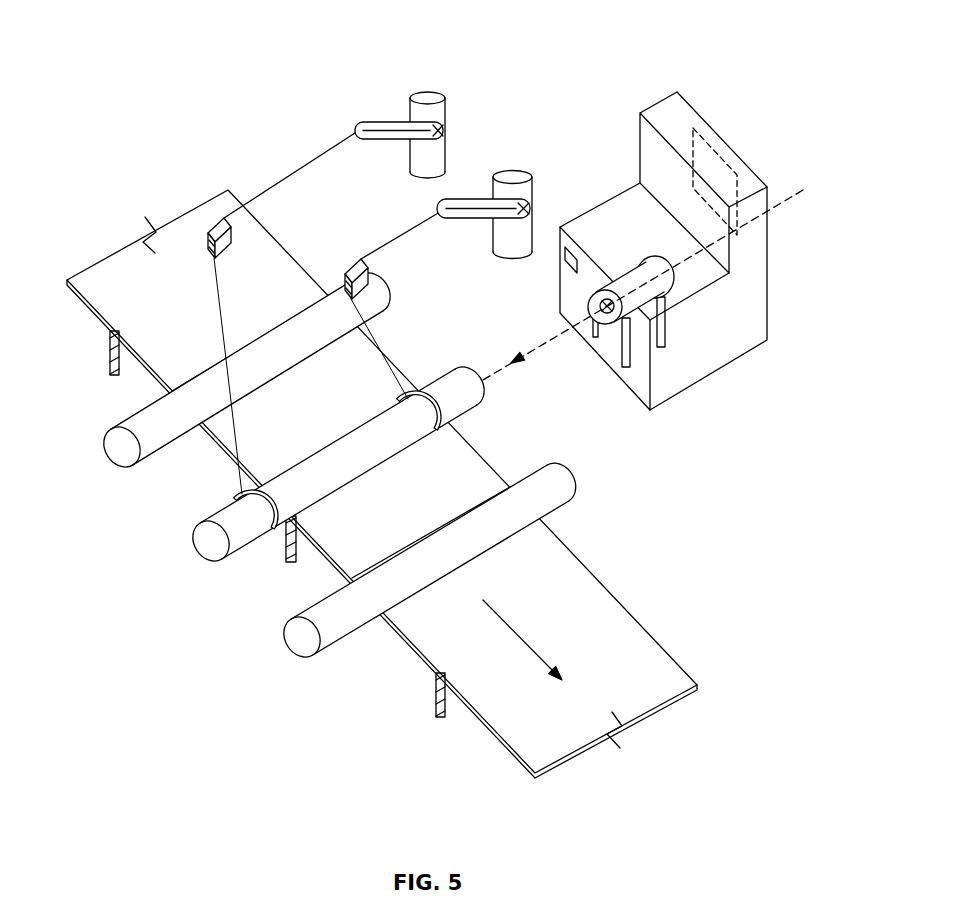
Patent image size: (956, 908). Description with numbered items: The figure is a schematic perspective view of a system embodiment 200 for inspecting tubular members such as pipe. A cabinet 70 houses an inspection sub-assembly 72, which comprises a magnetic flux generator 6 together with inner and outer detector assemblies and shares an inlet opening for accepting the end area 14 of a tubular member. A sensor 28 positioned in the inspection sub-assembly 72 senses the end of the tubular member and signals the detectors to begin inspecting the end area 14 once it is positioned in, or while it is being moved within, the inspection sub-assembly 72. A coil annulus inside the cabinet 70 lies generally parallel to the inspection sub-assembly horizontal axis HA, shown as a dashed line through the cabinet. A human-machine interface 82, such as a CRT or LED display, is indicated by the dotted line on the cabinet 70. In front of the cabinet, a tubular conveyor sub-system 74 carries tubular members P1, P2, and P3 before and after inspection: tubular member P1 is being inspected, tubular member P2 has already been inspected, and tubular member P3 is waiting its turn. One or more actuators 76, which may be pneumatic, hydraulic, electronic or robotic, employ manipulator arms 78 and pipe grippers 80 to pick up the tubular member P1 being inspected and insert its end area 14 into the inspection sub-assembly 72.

The system embodiment 200 is at (604, 39).
The actuator 76 is at (450, 66).
The manipulator arm 78 is at (308, 163).
The human-machine interface 82 is at (713, 152).
The inspection sub-assembly horizontal axis HA is at (803, 190).
The sensor 28 is at (562, 270).
The magnetic flux generator 6 is at (645, 272).
The cabinet 70 is at (735, 327).
The inspection sub-assembly 72 is at (647, 300).
The end area 14 is at (448, 378).
The pipe gripper 80 is at (433, 412).
The tubular member P1 is at (333, 447).
The tubular member P2 is at (423, 547).
The tubular member P3 is at (290, 327).
The tubular conveyor sub-system 74 is at (425, 657).